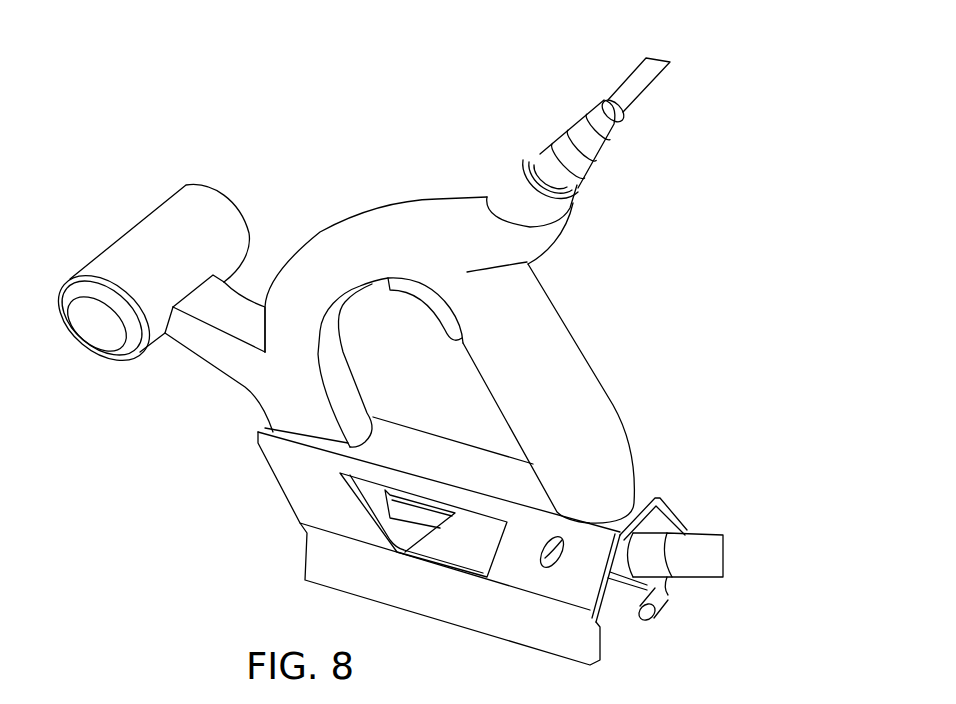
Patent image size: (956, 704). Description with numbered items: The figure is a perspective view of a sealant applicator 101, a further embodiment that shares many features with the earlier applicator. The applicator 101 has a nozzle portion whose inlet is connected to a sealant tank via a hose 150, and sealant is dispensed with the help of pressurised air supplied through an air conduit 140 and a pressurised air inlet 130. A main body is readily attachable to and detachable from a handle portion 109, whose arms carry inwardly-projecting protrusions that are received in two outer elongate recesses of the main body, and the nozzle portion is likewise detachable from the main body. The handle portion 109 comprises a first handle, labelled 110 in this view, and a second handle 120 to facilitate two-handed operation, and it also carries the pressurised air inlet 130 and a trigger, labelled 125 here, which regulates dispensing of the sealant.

The sealant applicator 101 is at (295, 141).
The handle portion 109 is at (252, 548).
The transducer cylinder 110 is at (143, 241).
The second handle 120 is at (552, 382).
The trigger 125 is at (433, 312).
The pressurised air inlet 130 is at (577, 203).
The air conduit 140 is at (632, 90).
The hose 150 is at (710, 558).